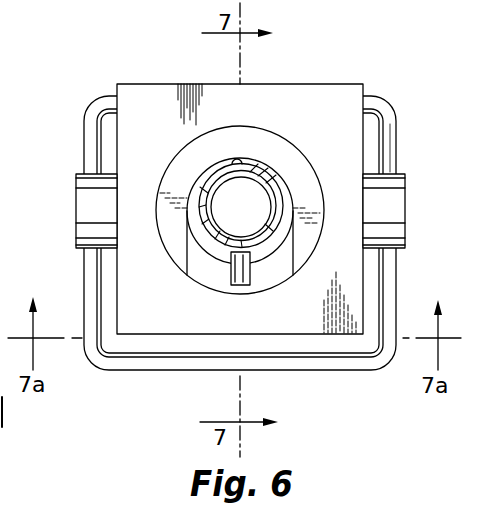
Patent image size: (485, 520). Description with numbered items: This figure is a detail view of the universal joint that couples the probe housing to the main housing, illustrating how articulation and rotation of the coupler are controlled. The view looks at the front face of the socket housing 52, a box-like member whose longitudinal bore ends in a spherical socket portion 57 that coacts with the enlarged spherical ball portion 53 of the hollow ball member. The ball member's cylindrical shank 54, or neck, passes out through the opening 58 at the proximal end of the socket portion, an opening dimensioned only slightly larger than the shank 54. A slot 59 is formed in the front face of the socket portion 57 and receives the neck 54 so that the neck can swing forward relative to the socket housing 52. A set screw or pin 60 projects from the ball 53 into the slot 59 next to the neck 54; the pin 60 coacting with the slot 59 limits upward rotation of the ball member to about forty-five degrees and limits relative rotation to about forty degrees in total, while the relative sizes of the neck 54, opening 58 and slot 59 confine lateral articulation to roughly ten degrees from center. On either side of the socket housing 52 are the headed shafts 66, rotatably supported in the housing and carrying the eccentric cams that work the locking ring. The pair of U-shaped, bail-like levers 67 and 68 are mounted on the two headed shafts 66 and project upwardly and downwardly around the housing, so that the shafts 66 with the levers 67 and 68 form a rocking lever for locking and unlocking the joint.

The socket housing 52 is at (316, 83).
The spherical ball portion 53 is at (208, 172).
The cylindrical shank 54 is at (275, 208).
The spherical socket portion 57 is at (288, 172).
The opening 58 is at (236, 158).
The slot 59 is at (267, 278).
The set screw or pin 60 is at (232, 262).
The headed shafts 66 is at (89, 229).
The lever 67 is at (163, 366).
The lever 68 is at (110, 97).